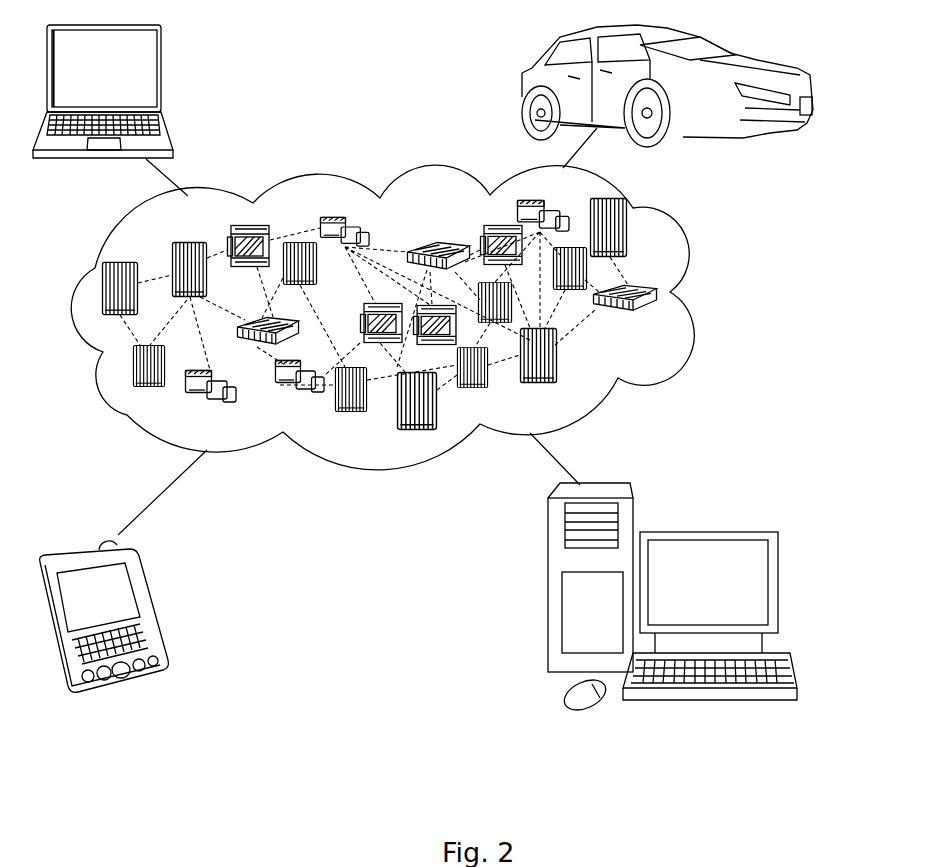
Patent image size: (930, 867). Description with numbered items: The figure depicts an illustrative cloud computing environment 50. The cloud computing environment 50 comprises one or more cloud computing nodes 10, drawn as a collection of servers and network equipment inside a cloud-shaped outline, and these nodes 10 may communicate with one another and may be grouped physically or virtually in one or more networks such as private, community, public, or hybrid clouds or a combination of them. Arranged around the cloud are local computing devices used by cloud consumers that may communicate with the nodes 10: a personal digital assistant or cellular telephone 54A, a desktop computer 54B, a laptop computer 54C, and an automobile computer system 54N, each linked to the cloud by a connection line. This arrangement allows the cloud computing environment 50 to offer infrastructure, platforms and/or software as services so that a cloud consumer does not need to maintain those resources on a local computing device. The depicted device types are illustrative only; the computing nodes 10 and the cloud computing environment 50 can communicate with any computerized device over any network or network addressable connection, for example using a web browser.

The cloud computing environment 50 is at (708, 298).
The cloud computing nodes 10 is at (658, 320).
The personal digital assistant or cellular telephone 54A is at (148, 607).
The desktop computer 54B is at (717, 510).
The laptop computer 54C is at (162, 73).
The automobile computer system 54N is at (525, 88).